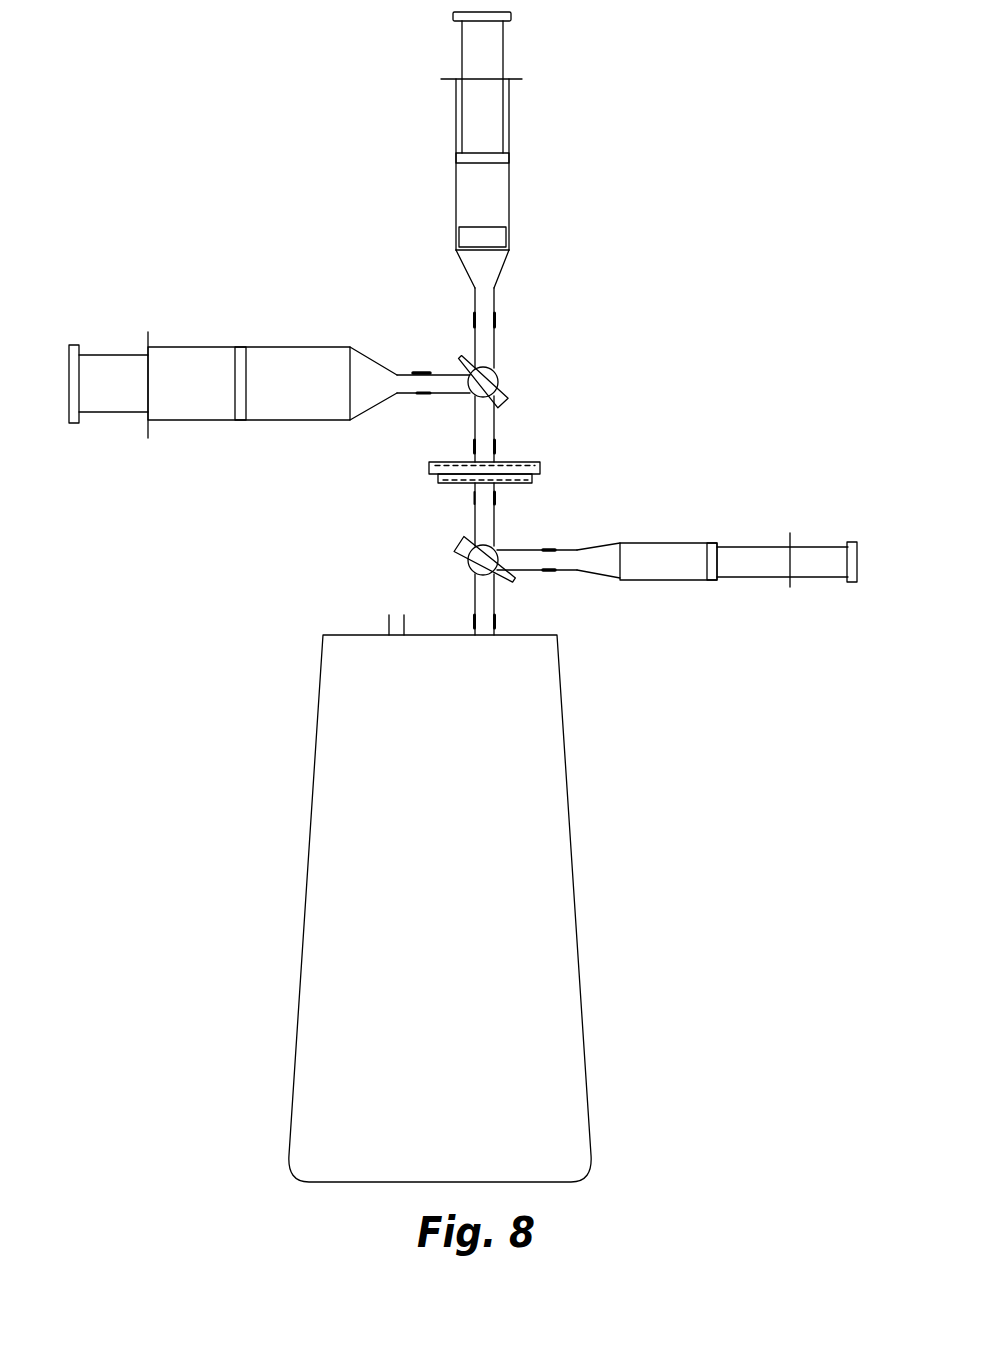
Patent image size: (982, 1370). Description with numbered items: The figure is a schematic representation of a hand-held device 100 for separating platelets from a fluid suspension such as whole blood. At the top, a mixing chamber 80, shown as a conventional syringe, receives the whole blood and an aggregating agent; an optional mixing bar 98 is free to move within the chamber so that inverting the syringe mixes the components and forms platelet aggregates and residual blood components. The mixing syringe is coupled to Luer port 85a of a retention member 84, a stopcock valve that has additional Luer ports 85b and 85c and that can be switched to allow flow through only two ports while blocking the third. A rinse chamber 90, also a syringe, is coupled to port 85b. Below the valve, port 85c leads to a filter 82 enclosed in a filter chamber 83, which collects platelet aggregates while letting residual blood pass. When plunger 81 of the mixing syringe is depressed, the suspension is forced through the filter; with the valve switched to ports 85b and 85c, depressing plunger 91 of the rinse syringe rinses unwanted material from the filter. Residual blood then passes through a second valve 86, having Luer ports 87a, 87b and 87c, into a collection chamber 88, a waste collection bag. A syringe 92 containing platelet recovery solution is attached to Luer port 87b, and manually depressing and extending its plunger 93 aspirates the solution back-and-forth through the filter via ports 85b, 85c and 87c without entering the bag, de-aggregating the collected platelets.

The device 100 is at (208, 166).
The mixing chamber 80 is at (510, 167).
The plunger 81 is at (503, 42).
The mixing bar 98 is at (502, 233).
The Luer port 85a is at (495, 321).
The Luer port 85b is at (422, 371).
The Luer port 85c is at (474, 443).
The retention member 84 is at (497, 372).
The filter 82 is at (533, 460).
The filter chamber 83 is at (430, 470).
The Luer port 87a is at (493, 622).
The Luer port 87b is at (552, 573).
The Luer port 87c is at (497, 498).
The second valve 86 is at (470, 568).
The collection chamber 88 is at (572, 832).
The rinse chamber 90 is at (190, 347).
The plunger 91 is at (100, 355).
The syringe 92 is at (647, 543).
The plunger 93 is at (817, 543).